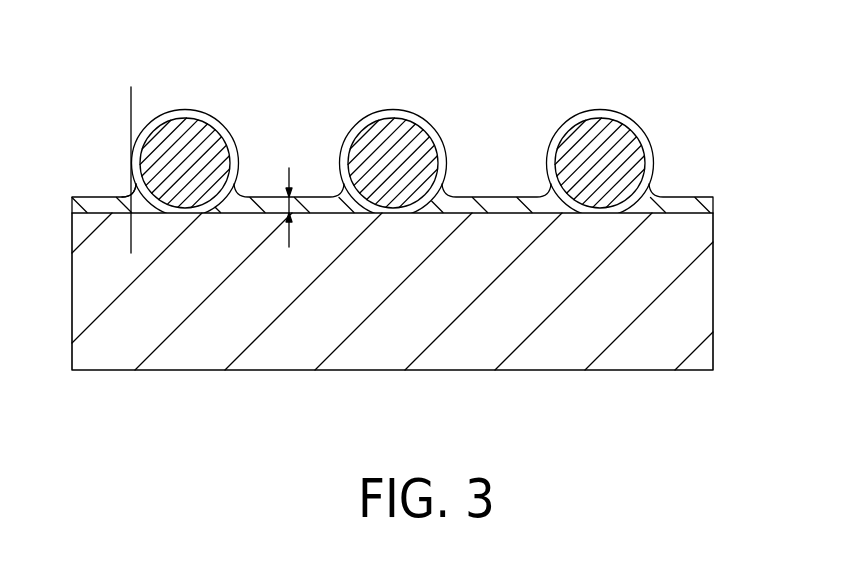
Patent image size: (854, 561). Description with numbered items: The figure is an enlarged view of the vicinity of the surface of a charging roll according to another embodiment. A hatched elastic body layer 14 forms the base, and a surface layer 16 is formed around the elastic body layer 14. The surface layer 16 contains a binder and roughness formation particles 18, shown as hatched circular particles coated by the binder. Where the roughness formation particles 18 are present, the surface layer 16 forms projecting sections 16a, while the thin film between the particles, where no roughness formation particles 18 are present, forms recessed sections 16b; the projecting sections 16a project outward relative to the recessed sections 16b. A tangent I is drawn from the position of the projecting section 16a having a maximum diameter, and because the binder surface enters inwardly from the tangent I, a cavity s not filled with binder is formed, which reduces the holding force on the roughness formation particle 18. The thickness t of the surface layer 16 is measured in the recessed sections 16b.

The elastic body layer 14 is at (690, 312).
The surface layer 16 is at (425, 115).
The projecting section 16a is at (182, 108).
The recessed section 16b is at (493, 197).
The roughness formation particle 18 is at (375, 137).
The tangent I is at (130, 110).
The cavity s is at (128, 195).
The thickness t is at (281, 198).